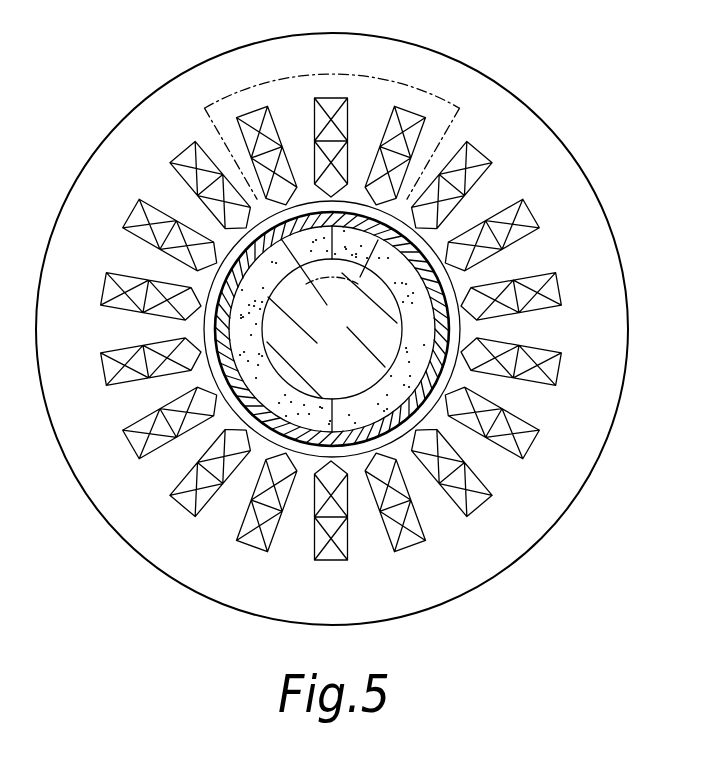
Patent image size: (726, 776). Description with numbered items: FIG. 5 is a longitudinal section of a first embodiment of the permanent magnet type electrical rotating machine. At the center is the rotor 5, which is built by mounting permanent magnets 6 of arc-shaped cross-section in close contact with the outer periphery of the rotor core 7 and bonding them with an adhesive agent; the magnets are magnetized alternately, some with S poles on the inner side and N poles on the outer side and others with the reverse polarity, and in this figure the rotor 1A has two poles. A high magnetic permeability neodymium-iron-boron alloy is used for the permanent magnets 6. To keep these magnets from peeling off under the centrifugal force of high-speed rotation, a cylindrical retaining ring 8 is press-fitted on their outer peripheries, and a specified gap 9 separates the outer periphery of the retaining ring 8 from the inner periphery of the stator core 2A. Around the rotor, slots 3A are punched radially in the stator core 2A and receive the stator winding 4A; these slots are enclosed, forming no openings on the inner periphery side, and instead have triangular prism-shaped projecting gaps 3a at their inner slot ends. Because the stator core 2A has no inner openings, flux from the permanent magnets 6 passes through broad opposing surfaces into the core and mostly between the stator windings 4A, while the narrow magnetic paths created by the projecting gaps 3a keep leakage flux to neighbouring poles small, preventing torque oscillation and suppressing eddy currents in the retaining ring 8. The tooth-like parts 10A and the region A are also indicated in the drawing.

The rotor 1A is at (332, 325).
The stator core 2A is at (457, 568).
The slots 3A is at (162, 443).
The projecting gaps 3a is at (472, 347).
The stator winding 4A is at (190, 152).
The rotor 5 is at (433, 245).
The permanent magnets 6 is at (266, 268).
The rotor core 7 is at (340, 342).
The retaining ring 8 is at (190, 275).
The gap 9 is at (458, 280).
The slot opening 10A is at (182, 328).
The pole pitch region A is at (373, 80).